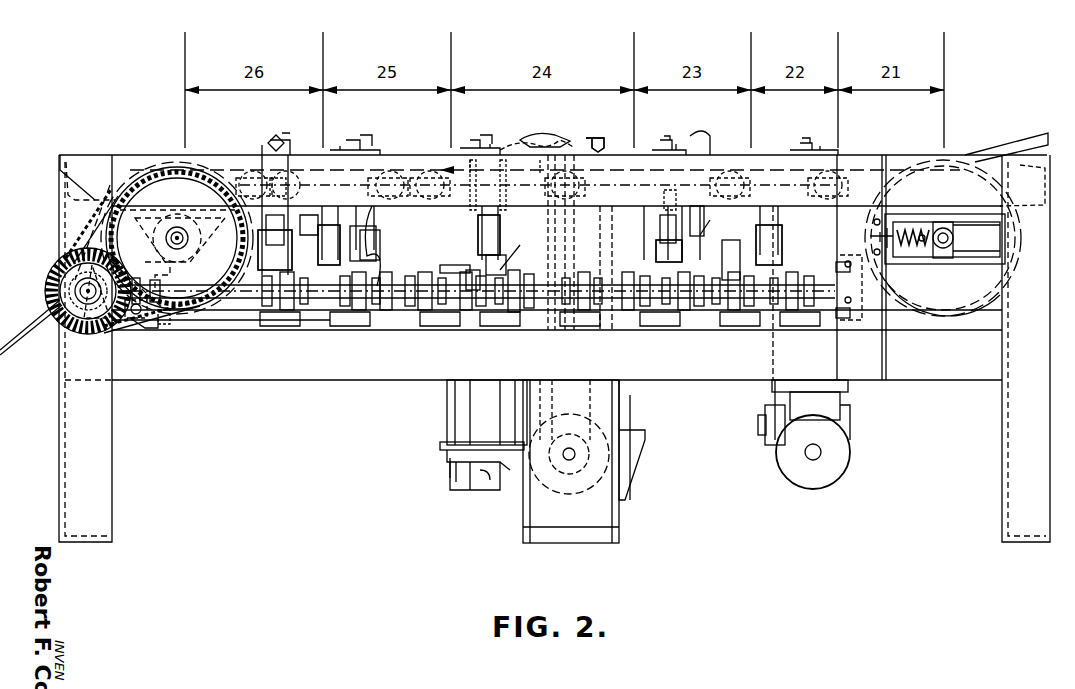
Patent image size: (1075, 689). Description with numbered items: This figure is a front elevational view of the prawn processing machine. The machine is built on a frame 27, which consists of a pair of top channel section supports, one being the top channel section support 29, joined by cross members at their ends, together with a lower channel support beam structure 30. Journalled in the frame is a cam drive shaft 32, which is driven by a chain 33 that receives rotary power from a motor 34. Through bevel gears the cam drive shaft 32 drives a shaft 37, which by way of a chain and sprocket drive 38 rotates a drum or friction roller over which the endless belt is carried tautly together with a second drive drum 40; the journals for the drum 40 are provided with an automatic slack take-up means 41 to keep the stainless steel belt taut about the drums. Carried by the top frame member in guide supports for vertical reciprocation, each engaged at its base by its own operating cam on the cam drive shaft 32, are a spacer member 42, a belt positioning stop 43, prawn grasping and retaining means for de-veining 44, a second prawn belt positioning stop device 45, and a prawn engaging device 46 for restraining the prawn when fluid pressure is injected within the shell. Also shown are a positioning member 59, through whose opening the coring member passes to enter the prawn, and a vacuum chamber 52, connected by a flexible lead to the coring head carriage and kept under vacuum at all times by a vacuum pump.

The frame 27 is at (103, 480).
The top channel section support 29 is at (165, 155).
The lower channel support beam structure 30 is at (205, 370).
The cam drive shaft 32 is at (242, 300).
The chain 33 is at (774, 398).
The motor 34 is at (840, 458).
The shaft 37 is at (78, 285).
The chain and sprocket drive 38 is at (141, 310).
The drive drum 40 is at (960, 165).
The automatic slack take-up means 41 is at (912, 251).
The spacer member 42 is at (802, 143).
The belt positioning stop 43 is at (664, 143).
The prawn grasping and retaining means for de-veining 44 is at (484, 143).
The second prawn belt positioning stop device 45 is at (354, 143).
The prawn engaging device 46 is at (280, 142).
The vacuum chamber 52 is at (464, 410).
The positioning member 59 is at (570, 165).